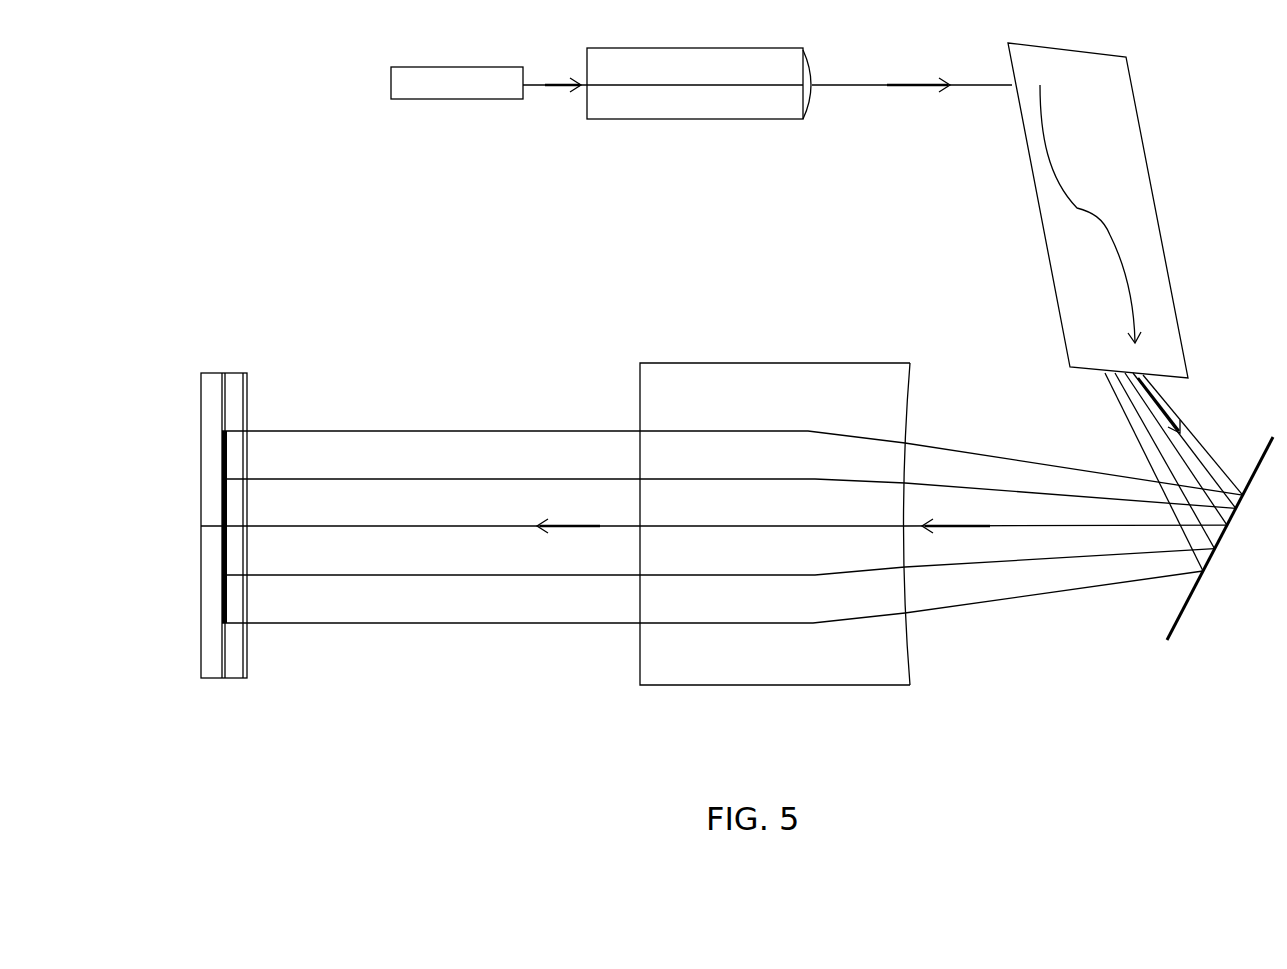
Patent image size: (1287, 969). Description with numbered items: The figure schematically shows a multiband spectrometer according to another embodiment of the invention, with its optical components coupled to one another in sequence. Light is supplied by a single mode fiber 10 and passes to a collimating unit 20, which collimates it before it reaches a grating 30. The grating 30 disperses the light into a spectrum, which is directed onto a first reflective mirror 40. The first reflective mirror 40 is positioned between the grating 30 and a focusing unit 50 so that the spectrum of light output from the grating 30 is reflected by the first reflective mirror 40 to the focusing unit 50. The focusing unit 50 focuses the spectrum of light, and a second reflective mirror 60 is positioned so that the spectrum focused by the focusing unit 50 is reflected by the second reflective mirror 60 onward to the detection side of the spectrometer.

The single mode fiber 10 is at (457, 99).
The collimating unit 20 is at (702, 119).
The grating 30 is at (1047, 248).
The first reflective mirror 40 is at (1197, 587).
The focusing unit 50 is at (780, 363).
The second reflective mirror 60 is at (228, 373).